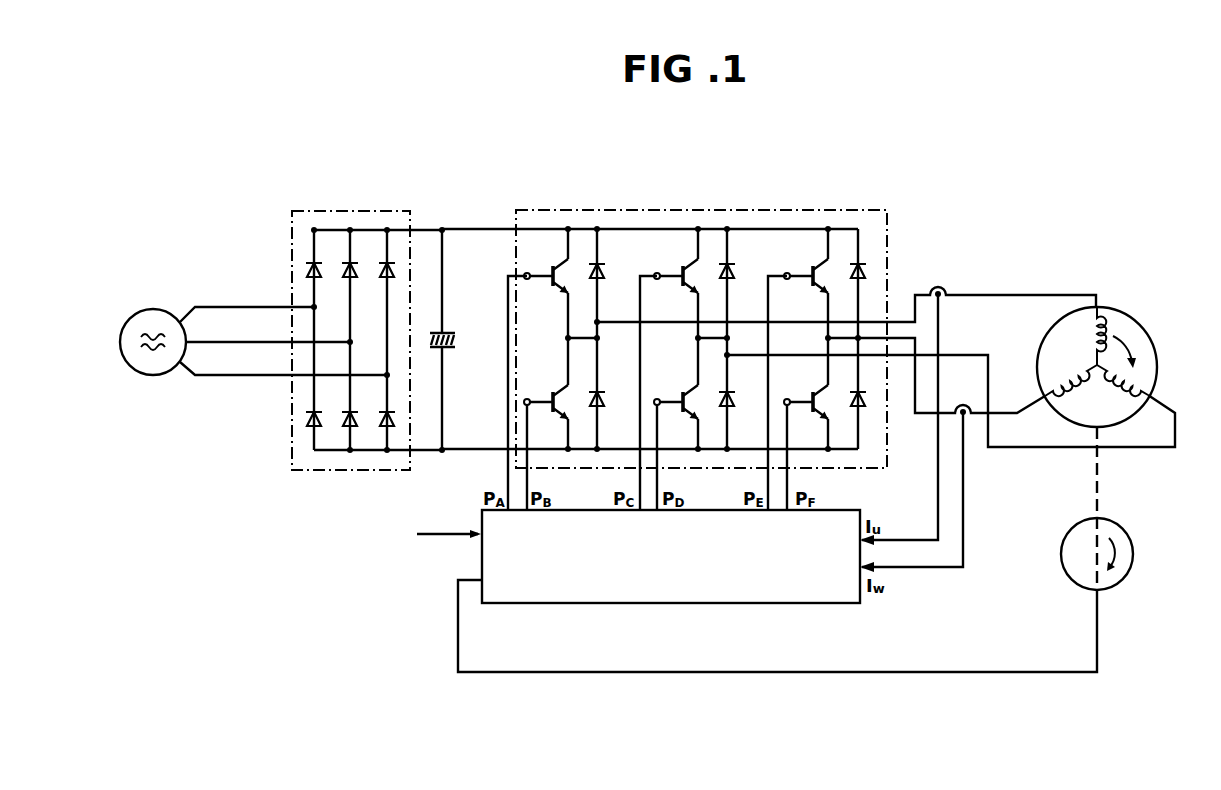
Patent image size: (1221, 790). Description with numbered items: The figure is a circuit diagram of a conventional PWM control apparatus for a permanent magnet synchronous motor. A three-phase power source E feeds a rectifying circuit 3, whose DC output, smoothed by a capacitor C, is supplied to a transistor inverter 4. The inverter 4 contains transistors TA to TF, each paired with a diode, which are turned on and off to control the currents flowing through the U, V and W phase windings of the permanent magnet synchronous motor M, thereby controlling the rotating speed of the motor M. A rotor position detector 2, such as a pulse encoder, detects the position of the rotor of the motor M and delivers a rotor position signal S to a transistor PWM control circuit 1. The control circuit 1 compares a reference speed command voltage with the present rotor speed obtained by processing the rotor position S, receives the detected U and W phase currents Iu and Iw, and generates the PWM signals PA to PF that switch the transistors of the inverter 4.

The transistor PWM control circuit 1 is at (813, 604).
The rotor position detector 2 is at (1132, 548).
The rectifying circuit 3 is at (363, 210).
The transistor inverter 4 is at (820, 208).
The 3-phase power source E is at (160, 307).
The smoothing capacitor C is at (454, 340).
The permanent magnet synchronous motor M is at (1148, 338).